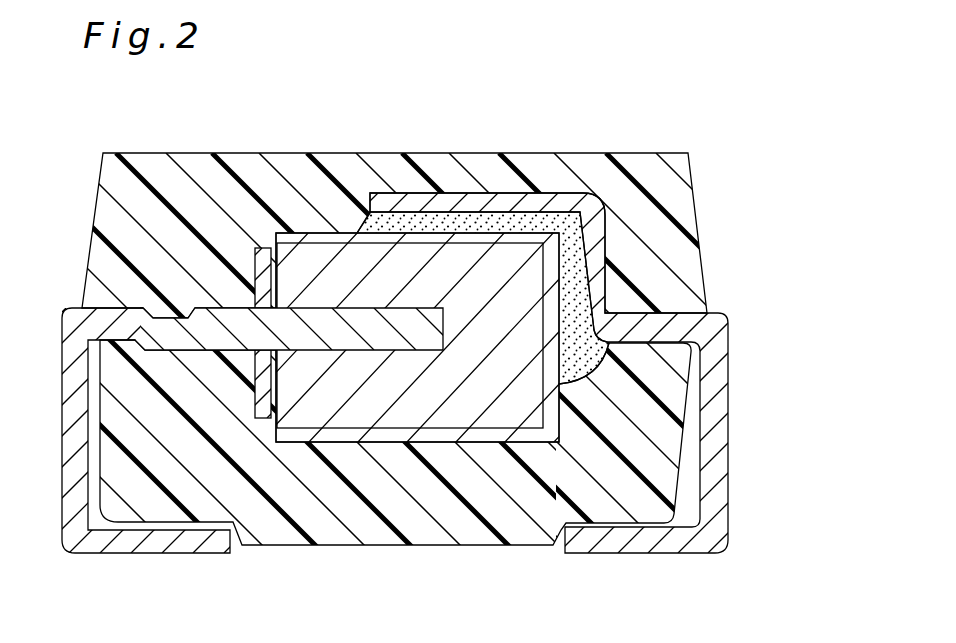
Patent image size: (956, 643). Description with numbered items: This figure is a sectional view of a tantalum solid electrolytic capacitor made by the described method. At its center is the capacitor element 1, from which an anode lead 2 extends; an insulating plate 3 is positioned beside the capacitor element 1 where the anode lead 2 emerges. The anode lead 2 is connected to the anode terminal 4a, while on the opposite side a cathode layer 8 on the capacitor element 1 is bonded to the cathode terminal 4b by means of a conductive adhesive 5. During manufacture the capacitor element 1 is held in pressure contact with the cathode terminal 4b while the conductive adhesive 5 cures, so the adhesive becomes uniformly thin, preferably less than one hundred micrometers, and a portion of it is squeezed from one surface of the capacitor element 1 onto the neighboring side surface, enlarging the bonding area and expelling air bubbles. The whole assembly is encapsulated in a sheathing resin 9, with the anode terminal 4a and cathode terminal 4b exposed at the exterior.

The capacitor element 1 is at (423, 393).
The anode lead 2 is at (248, 318).
The insulating plate 3 is at (265, 413).
The anode terminal 4a is at (82, 315).
The cathode terminal 4b is at (420, 195).
The conductive adhesive 5 is at (487, 218).
The cathode layer 8 is at (337, 233).
The sheathing resin 9 is at (367, 517).